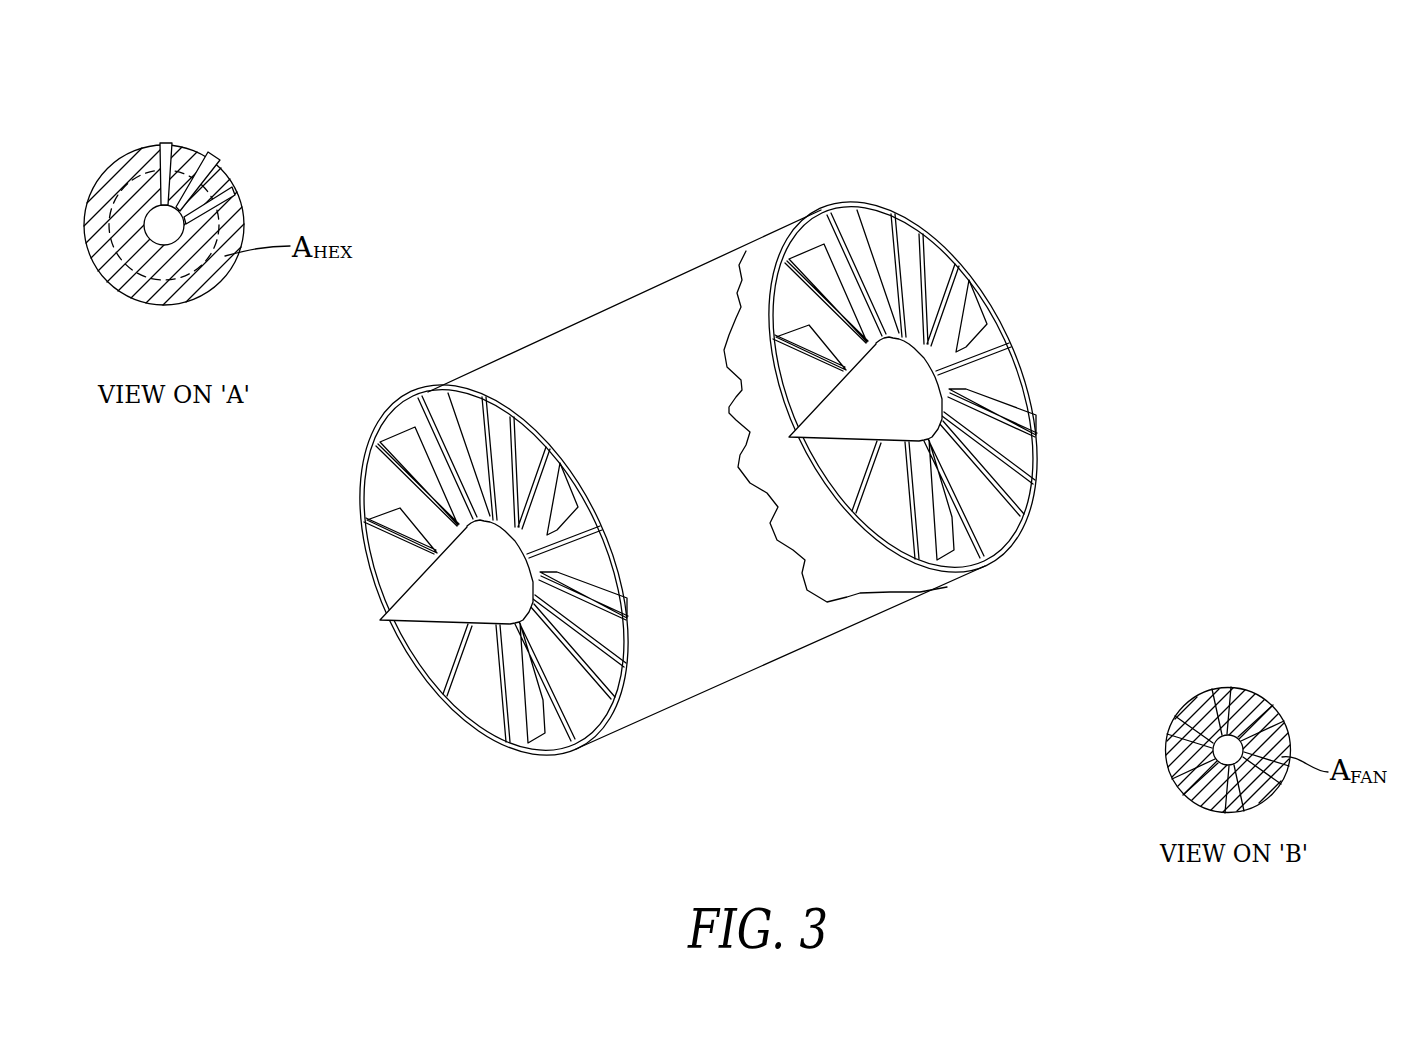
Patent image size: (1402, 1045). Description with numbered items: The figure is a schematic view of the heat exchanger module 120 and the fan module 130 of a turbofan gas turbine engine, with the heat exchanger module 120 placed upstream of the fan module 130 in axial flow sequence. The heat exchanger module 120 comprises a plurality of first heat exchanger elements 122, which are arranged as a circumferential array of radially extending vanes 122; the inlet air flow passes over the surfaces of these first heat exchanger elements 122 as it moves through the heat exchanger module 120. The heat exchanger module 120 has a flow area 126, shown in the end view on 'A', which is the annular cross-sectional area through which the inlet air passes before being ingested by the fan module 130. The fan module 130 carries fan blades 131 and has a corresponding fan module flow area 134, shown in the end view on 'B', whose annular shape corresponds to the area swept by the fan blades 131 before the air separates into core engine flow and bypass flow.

The heat exchanger module 120 is at (186, 145).
The first heat exchanger elements 122 is at (167, 147).
The heat exchanger module flow area 126 is at (220, 263).
The fan module 130 is at (804, 230).
The fan blades 131 is at (860, 243).
The fan module flow area 134 is at (1180, 763).